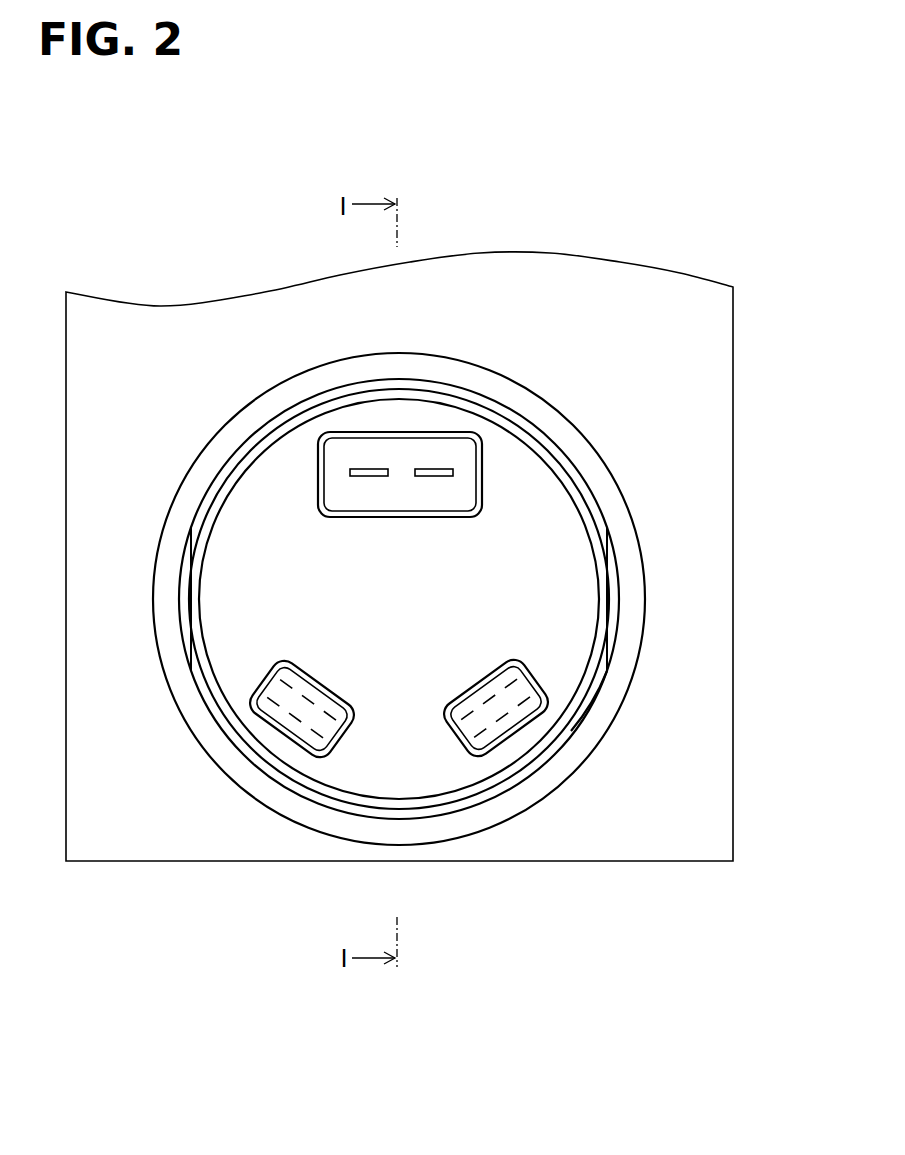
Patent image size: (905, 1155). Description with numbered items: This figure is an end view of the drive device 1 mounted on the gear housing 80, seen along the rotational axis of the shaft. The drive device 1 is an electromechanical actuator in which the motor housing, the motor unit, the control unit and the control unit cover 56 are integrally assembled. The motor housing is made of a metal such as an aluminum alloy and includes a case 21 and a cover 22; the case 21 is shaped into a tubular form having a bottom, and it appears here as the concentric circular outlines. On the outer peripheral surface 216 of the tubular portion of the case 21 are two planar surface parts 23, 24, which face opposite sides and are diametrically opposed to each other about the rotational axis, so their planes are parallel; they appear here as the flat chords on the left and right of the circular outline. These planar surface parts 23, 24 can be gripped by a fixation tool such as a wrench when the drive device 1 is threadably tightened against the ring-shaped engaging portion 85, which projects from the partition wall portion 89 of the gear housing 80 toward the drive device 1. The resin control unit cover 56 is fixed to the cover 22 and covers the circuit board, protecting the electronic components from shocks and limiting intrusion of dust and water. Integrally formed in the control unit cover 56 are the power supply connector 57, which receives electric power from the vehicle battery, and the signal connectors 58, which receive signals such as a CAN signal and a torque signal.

The drive device 1 is at (416, 590).
The case 21 is at (215, 480).
The cover 22 is at (253, 450).
The planar surface part 23 is at (190, 573).
The planar surface part 24 is at (608, 565).
The control unit cover 56 is at (282, 455).
The power supply connector 57 is at (443, 432).
The signal connectors 58 is at (290, 745).
The gear housing 80 is at (663, 347).
The engaging portion 85 is at (593, 457).
The partition wall portion 89 is at (647, 805).
The outer peripheral surface 216 is at (590, 710).